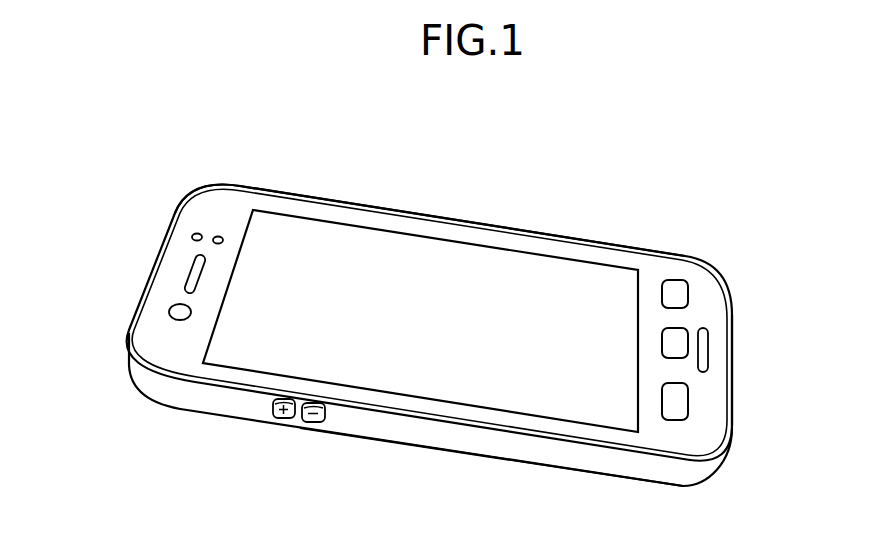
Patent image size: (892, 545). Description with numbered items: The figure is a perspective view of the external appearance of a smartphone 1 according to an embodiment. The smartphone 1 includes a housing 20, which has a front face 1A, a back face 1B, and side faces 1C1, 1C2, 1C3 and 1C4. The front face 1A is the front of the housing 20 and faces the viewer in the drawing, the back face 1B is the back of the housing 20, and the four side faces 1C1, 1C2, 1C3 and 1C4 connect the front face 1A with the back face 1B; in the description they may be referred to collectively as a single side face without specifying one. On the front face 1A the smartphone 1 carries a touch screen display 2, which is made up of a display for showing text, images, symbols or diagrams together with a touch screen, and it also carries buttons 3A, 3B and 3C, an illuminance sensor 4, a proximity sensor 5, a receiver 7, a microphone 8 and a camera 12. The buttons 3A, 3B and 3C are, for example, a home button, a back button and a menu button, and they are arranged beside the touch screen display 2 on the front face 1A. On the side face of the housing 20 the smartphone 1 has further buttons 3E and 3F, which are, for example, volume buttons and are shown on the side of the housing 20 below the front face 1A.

The smartphone 1 is at (445, 310).
The front face 1A is at (157, 340).
The back face 1B is at (188, 412).
The side face 1C1 is at (173, 212).
The side face 1C2 is at (733, 390).
The side face 1C3 is at (497, 443).
The side face 1C4 is at (378, 208).
The touch screen display 2 is at (507, 265).
The button 3A is at (688, 410).
The button 3B is at (682, 327).
The button 3C is at (675, 279).
The button 3E is at (287, 419).
The button 3F is at (315, 425).
The illuminance sensor 4 is at (192, 237).
The proximity sensor 5 is at (218, 236).
The receiver 7 is at (190, 271).
The microphone 8 is at (704, 353).
The camera 12 is at (170, 313).
The housing 20 is at (430, 428).